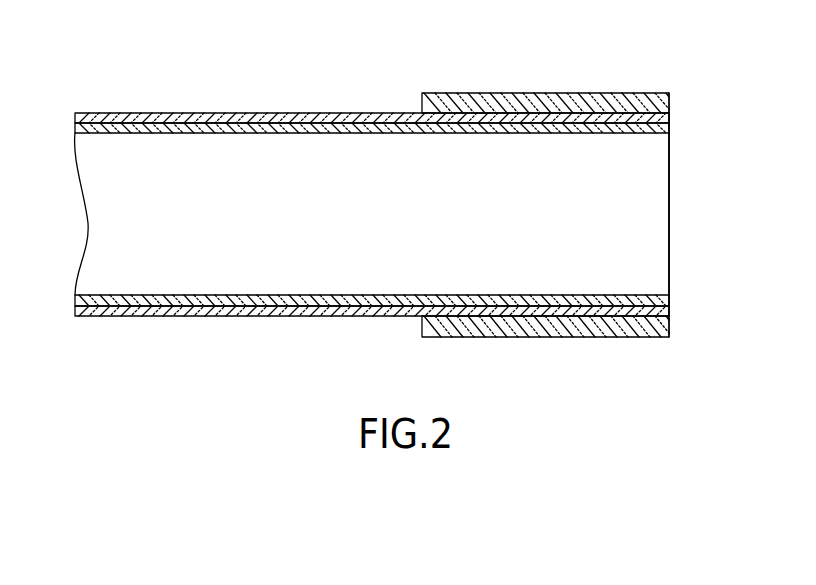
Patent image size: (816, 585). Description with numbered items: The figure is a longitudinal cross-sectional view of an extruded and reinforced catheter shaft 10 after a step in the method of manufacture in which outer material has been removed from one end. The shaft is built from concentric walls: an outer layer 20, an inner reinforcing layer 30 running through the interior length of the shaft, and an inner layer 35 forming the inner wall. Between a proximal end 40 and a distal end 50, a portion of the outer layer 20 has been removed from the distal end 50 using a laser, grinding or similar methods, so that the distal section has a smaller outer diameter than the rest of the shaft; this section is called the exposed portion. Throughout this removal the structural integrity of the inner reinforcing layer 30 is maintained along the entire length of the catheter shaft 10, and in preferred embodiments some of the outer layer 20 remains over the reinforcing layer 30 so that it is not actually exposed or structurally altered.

The catheter shaft 10 is at (473, 56).
The outer layer 20 is at (647, 97).
The inner reinforcing layer 30 is at (669, 115).
The inner layer 35 is at (623, 133).
The proximal end 40 is at (668, 295).
The distal end 50 is at (63, 224).